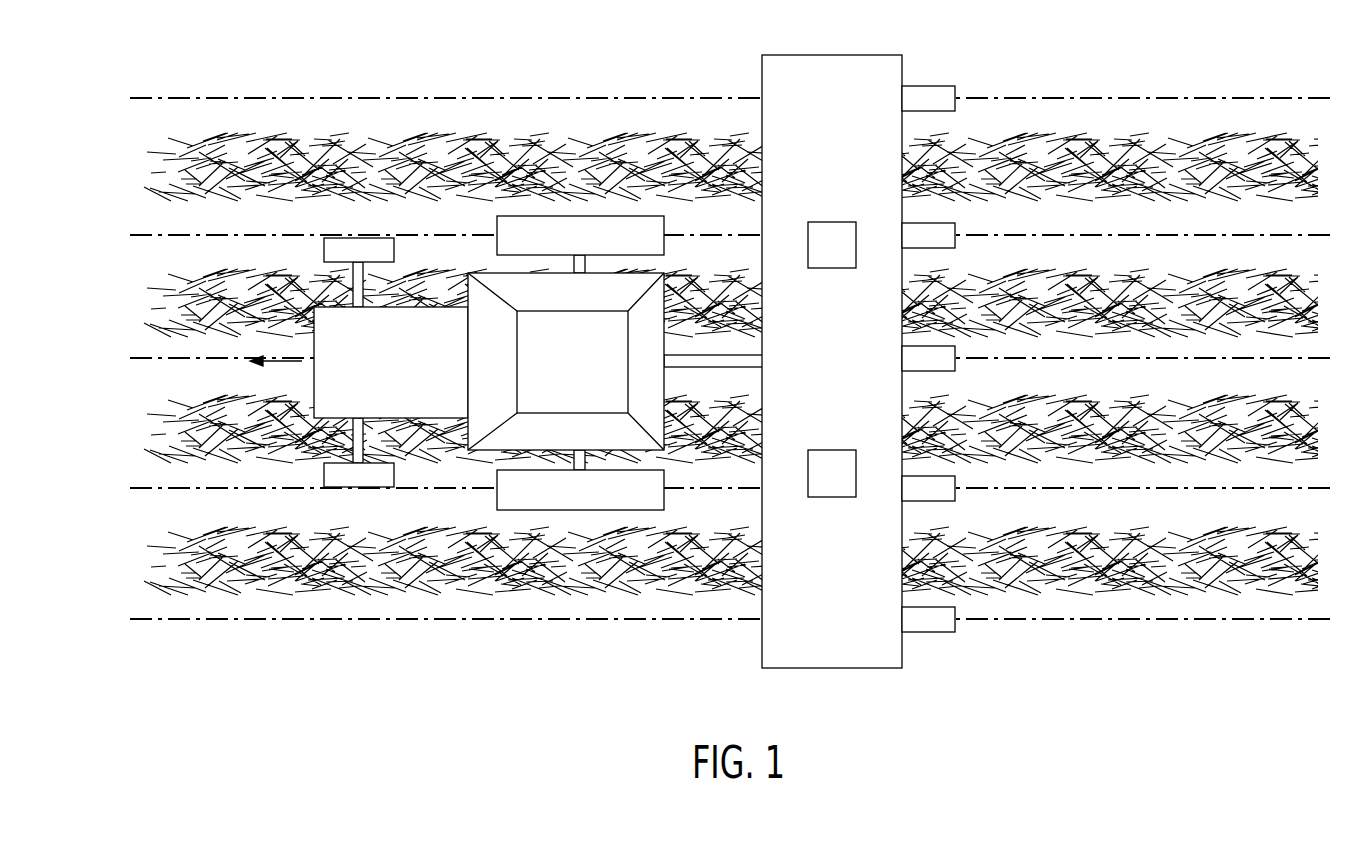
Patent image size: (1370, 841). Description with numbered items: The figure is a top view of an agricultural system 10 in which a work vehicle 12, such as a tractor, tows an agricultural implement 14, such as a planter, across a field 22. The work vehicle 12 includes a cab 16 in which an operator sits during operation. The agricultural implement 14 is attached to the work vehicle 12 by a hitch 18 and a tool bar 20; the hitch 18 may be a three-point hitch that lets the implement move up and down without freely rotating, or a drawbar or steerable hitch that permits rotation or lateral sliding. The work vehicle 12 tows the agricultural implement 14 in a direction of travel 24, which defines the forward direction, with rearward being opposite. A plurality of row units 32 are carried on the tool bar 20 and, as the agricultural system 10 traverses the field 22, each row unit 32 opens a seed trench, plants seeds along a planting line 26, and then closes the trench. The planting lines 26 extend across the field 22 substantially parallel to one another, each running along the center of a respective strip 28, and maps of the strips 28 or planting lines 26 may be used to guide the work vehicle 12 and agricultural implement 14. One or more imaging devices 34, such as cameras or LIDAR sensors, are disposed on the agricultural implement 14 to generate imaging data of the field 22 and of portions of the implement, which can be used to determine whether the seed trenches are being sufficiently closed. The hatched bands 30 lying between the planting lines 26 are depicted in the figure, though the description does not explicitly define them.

The agricultural system 10 is at (358, 58).
The work vehicle 12 is at (518, 363).
The agricultural implement 14 is at (886, 334).
The cab 16 is at (582, 375).
The hitch 18 is at (703, 356).
The tool bar 20 is at (831, 55).
The field 22 is at (259, 225).
The direction of travel 24 is at (276, 364).
The planting line 26 is at (1177, 237).
The strip 28 is at (1030, 227).
The crop residue 30 is at (1060, 178).
The row unit 32 is at (932, 86).
The imaging device 34 is at (834, 222).